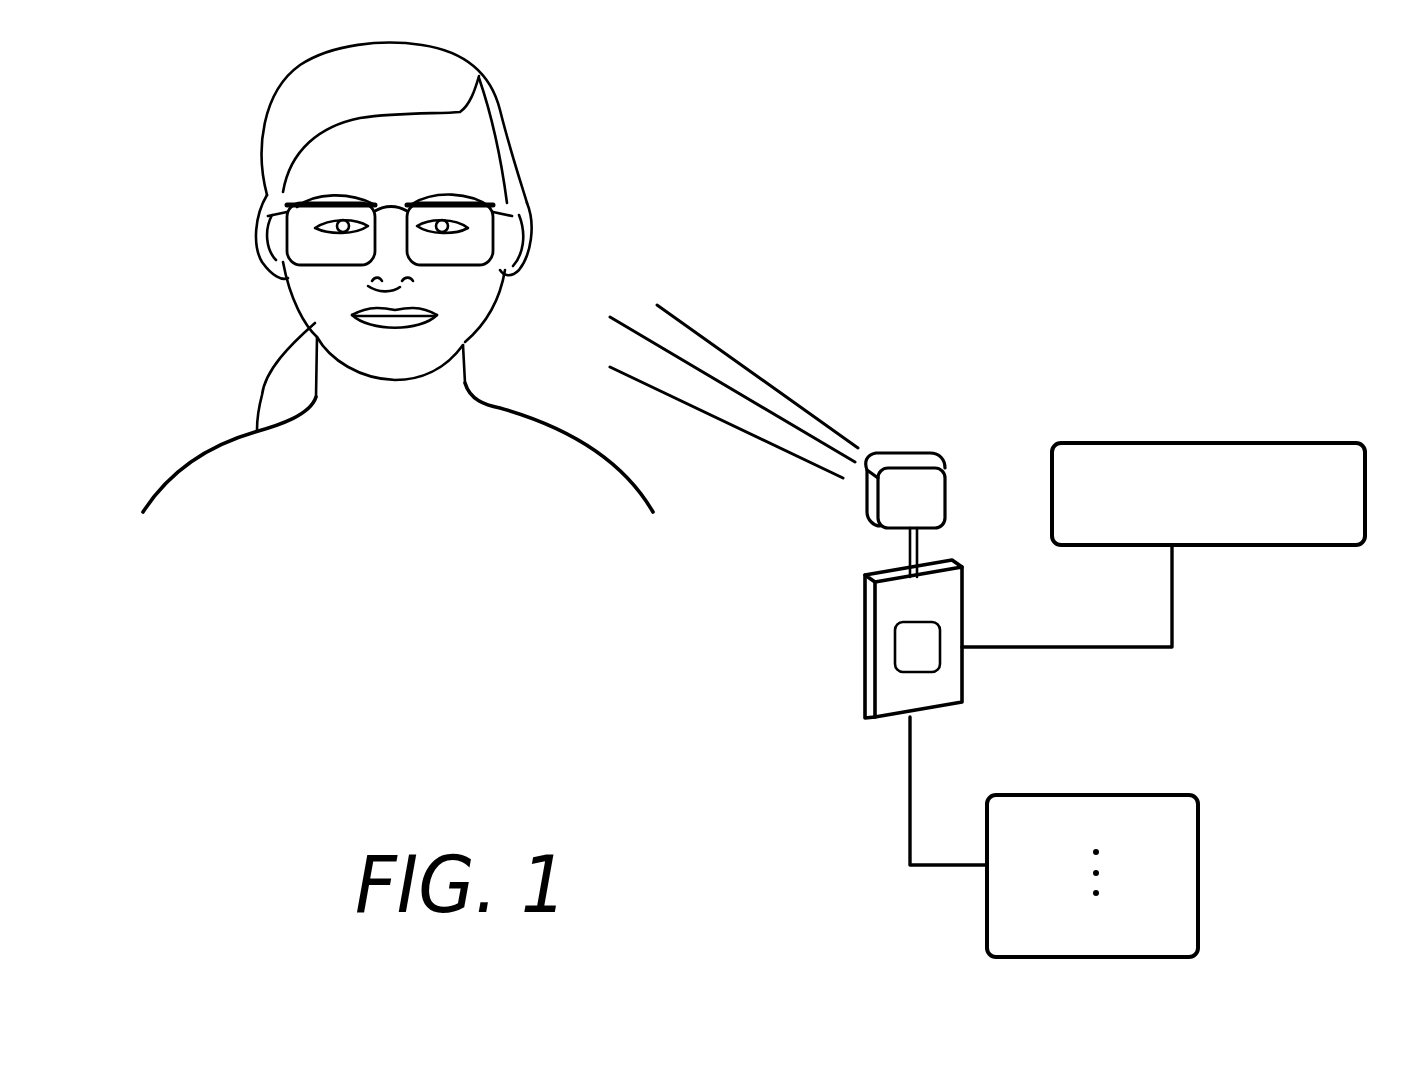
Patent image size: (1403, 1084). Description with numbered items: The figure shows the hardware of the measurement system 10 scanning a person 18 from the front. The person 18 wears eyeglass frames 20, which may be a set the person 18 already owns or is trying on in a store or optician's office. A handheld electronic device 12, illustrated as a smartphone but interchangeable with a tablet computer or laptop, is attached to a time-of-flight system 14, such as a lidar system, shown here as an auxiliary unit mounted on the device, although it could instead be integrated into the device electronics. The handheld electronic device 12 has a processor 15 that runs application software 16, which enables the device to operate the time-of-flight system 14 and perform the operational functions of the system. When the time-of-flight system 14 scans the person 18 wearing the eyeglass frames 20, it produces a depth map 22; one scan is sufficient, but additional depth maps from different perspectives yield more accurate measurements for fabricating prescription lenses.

The measurement system 10 is at (832, 223).
The handheld electronic device 12 is at (877, 655).
The time-of-flight system 14 is at (945, 488).
The processor 15 is at (940, 653).
The application software 16 is at (1230, 545).
The person 18 is at (493, 137).
The eyeglass frames 20 is at (474, 264).
The depth map 22 is at (1198, 862).